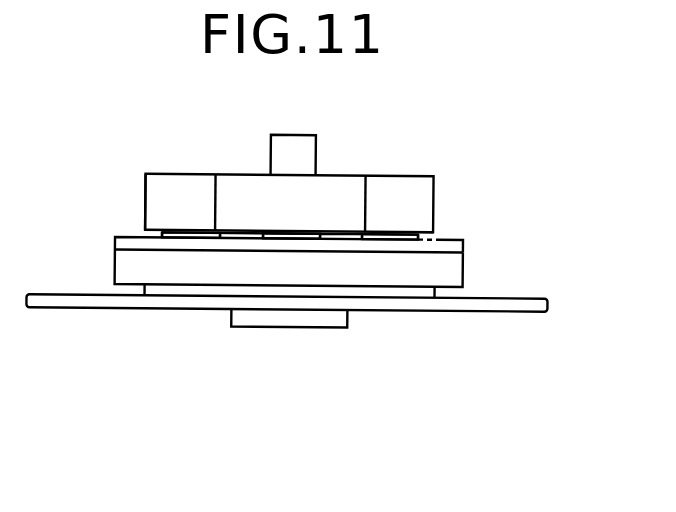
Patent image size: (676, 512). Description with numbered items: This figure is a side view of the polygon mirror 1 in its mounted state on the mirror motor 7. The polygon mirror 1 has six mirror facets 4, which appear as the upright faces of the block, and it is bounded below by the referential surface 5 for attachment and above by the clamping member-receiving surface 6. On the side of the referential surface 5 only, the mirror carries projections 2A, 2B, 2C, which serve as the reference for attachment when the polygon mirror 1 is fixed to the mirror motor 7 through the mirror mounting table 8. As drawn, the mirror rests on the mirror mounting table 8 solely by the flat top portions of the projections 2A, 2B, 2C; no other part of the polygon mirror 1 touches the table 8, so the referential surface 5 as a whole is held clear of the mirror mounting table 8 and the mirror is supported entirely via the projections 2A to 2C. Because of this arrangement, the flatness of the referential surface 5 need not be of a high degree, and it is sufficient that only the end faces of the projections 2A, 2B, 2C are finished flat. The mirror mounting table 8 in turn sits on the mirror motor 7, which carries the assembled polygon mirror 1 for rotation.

The polygon mirror 1 is at (168, 174).
The projection 2A is at (177, 238).
The projection 2B is at (283, 238).
The projection 2C is at (385, 236).
The mirror facet 4 is at (145, 200).
The referential surface 5 is at (423, 232).
The clamping member-receiving surface 6 is at (386, 176).
The mirror motor 7 is at (392, 276).
The mirror mounting table 8 is at (462, 239).